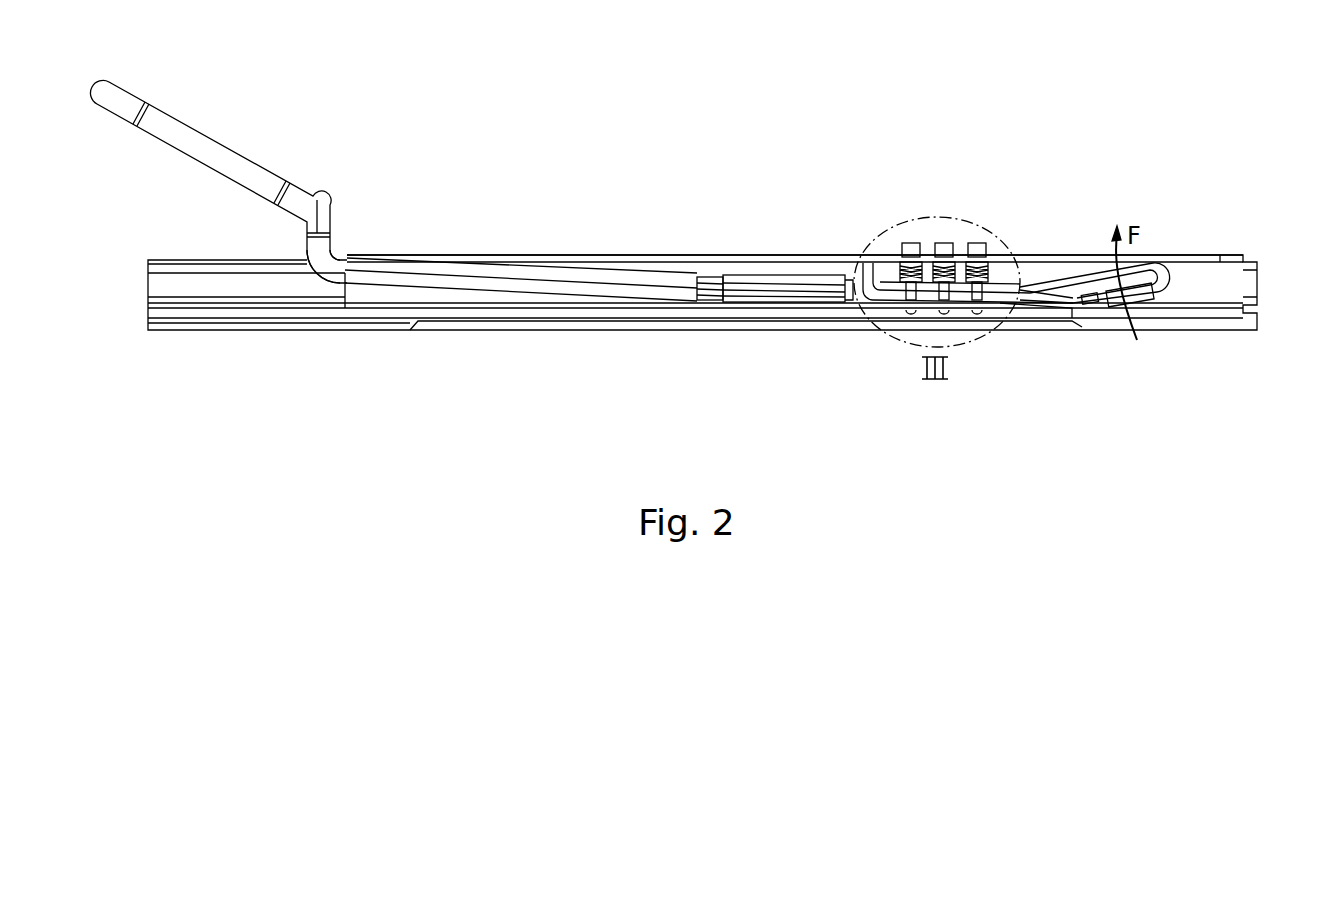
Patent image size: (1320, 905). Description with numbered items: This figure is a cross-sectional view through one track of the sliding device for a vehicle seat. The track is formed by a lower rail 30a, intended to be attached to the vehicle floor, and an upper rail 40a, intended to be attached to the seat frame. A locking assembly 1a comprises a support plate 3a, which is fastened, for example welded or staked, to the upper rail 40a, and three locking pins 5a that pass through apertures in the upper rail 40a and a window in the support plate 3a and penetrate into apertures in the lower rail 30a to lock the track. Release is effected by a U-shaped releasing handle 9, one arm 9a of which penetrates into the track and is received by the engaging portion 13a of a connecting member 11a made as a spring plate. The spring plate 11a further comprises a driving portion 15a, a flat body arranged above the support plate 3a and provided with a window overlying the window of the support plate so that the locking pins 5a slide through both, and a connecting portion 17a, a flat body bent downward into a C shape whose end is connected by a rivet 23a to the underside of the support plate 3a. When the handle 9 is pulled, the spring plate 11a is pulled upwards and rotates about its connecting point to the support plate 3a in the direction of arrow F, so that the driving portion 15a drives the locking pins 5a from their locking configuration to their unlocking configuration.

The releasing handle 9 is at (221, 126).
The arm of the releasing handle 9a is at (334, 253).
The connecting member 11a is at (820, 275).
The upper rail 40a is at (753, 255).
The locking pins 5a is at (977, 243).
The locking assembly 1a is at (1000, 279).
The connecting portion 17a is at (1173, 290).
The lower rail 30a is at (513, 330).
The engaging portion 13a is at (768, 287).
The support plate 3a is at (1045, 303).
The driving portion 15a is at (1027, 290).
The rivet 23a is at (1138, 300).